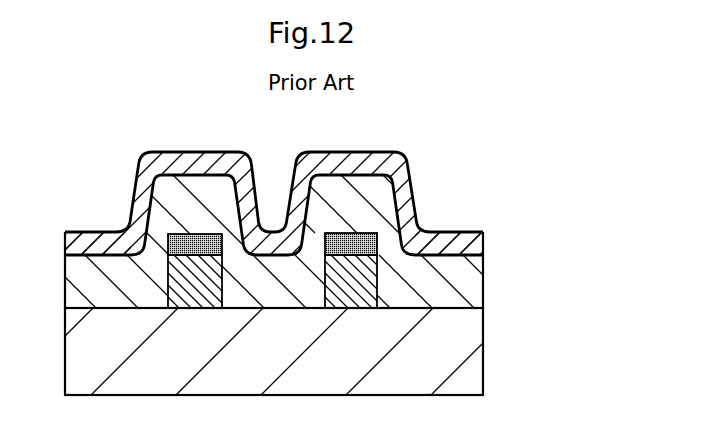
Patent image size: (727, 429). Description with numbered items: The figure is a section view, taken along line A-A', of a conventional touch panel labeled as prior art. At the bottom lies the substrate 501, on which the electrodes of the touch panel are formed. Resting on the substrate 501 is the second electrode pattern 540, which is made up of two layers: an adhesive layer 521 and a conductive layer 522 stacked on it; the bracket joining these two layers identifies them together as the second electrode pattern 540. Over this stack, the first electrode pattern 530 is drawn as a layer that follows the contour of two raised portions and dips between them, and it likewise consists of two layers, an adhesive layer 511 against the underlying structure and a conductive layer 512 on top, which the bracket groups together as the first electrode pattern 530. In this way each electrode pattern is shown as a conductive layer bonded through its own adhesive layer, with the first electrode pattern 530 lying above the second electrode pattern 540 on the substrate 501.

The substrate 501 is at (463, 344).
The adhesive layer 511 is at (393, 213).
The conductive layer 512 is at (395, 173).
The adhesive layer 521 is at (463, 239).
The conductive layer 522 is at (462, 282).
The first electrode pattern 530 is at (512, 113).
The second electrode pattern 540 is at (560, 227).